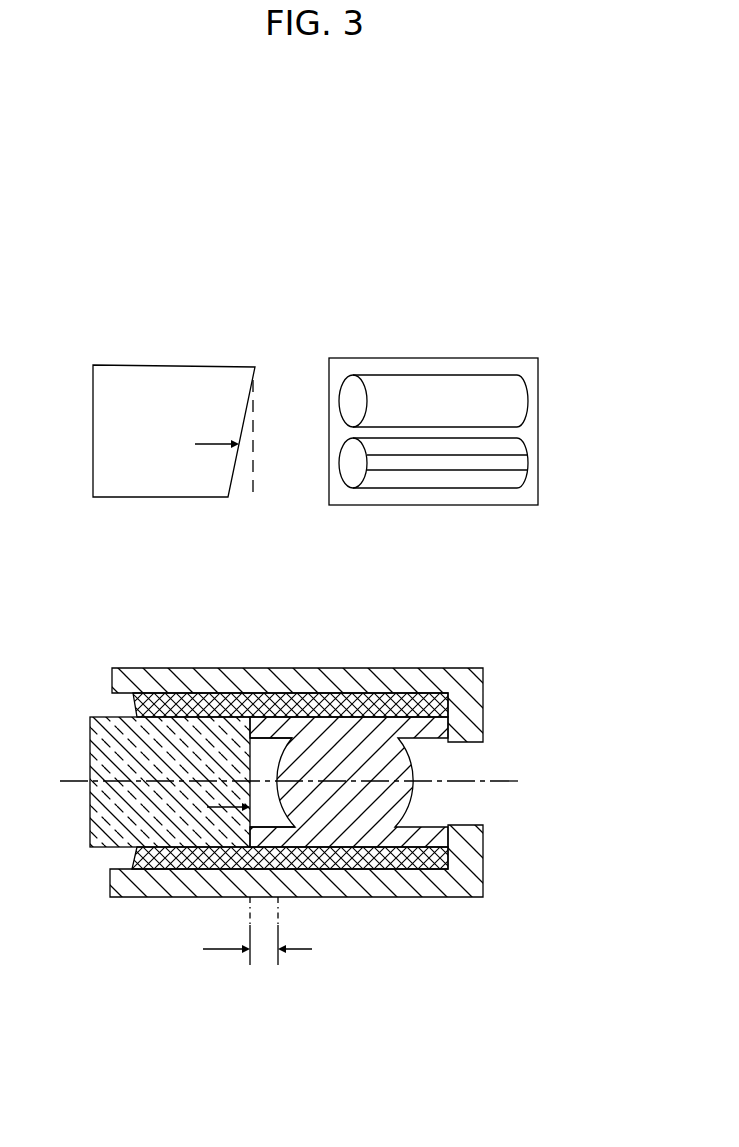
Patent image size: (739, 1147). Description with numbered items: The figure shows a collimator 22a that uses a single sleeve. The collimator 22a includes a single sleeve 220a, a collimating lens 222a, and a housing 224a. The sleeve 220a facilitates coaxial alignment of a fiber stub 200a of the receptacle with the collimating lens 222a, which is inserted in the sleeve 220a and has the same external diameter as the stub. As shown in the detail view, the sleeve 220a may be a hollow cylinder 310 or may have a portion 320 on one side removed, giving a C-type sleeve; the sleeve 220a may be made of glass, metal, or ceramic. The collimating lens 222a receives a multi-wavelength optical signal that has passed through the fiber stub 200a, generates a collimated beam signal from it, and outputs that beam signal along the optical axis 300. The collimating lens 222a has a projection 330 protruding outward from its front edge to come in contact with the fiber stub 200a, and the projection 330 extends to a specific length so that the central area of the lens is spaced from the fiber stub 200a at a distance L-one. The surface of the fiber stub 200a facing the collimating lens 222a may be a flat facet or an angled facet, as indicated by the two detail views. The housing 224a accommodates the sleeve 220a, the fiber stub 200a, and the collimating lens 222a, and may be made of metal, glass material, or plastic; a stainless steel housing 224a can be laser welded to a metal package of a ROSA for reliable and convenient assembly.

The collimator 22a is at (426, 284).
The fiber stub 200a is at (172, 747).
The sleeve 220a is at (398, 505).
The collimating lens 222a is at (368, 810).
The housing 224a is at (470, 868).
The optical axis 300 is at (70, 781).
The hollow cylinder 310 is at (527, 395).
The removed portion 320 is at (527, 467).
The projection 330 is at (266, 745).